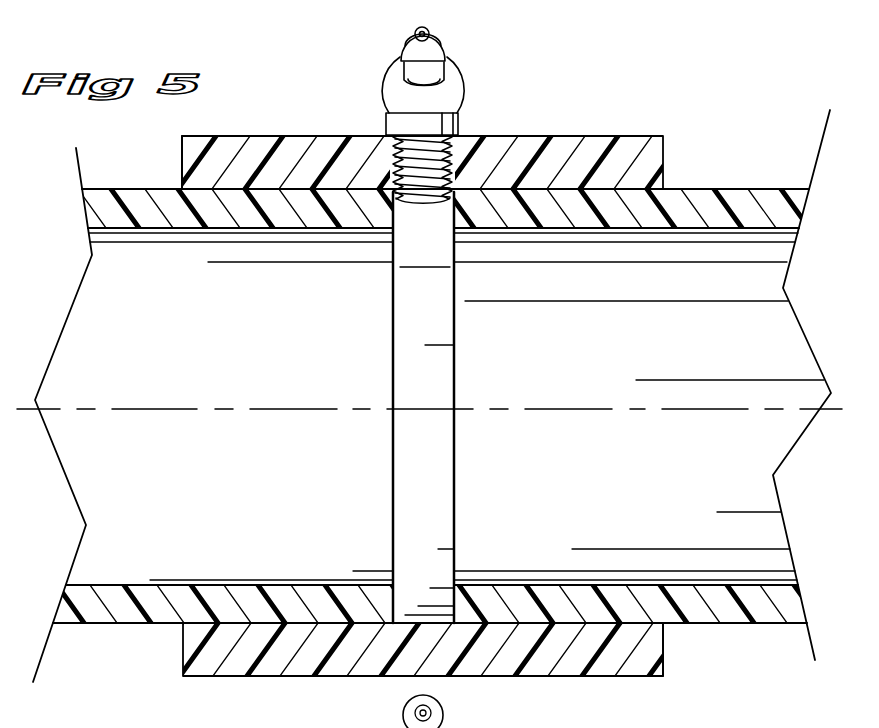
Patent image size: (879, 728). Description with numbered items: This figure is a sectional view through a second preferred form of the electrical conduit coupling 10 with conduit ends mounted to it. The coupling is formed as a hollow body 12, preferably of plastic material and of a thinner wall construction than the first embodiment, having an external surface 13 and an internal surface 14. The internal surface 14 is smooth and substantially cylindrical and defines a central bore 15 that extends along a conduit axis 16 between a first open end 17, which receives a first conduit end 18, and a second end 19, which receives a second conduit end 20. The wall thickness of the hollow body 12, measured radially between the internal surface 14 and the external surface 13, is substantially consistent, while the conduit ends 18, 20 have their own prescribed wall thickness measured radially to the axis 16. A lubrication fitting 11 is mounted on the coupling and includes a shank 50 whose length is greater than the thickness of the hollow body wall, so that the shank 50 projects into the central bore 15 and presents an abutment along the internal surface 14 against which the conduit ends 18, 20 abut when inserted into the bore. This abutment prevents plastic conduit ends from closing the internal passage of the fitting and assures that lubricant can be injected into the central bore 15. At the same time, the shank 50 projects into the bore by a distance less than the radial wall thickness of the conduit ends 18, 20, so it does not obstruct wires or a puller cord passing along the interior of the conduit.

The electrical conduit coupling 10 is at (538, 111).
The lubrication fitting 11 is at (470, 63).
The hollow body 12 is at (247, 680).
The external surface 13 is at (227, 136).
The internal surface 14 is at (204, 165).
The central bore 15 is at (422, 374).
The conduit axis 16 is at (154, 407).
The first open end 17 is at (665, 642).
The first conduit end 18 is at (396, 490).
The second end 19 is at (182, 158).
The second conduit end 20 is at (444, 494).
The shank 50 is at (413, 191).